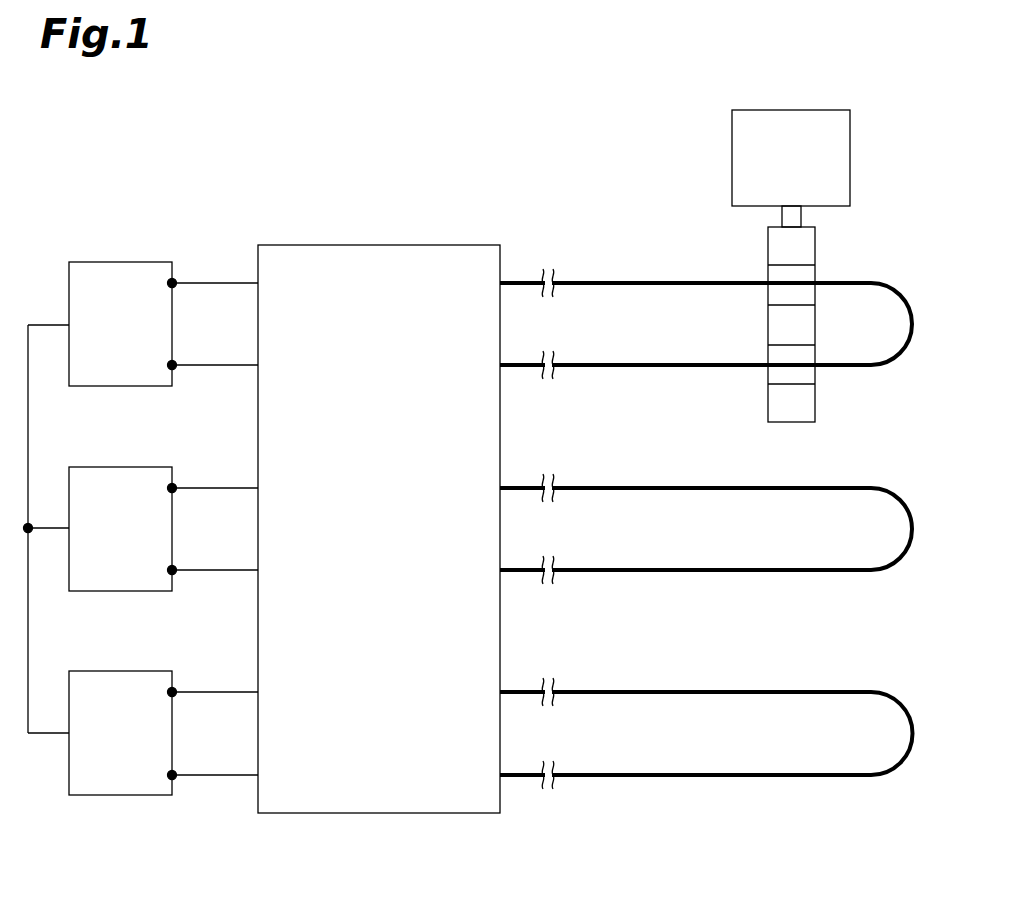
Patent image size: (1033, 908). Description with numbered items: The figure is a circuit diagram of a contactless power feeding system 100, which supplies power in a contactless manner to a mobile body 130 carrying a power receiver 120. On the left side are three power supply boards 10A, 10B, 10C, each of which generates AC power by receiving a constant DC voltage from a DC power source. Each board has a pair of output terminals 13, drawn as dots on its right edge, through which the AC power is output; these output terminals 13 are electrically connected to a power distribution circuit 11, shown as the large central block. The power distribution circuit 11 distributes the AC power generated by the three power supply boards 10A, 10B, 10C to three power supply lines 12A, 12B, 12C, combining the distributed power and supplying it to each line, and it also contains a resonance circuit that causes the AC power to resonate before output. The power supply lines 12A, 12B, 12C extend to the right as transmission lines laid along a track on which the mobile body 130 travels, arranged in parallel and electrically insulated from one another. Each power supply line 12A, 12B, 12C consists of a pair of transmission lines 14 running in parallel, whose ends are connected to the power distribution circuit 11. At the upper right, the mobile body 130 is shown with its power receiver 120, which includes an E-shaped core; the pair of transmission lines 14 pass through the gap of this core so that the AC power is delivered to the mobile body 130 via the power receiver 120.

The contactless power feeding system 100 is at (522, 200).
The power distribution circuit 11 is at (396, 245).
The power supply board 10A is at (120, 251).
The power supply board 10B is at (120, 456).
The power supply board 10C is at (120, 660).
The output terminals 13 is at (176, 362).
The power supply line 12A is at (640, 271).
The power supply line 12B is at (640, 476).
The power supply line 12C is at (640, 680).
The transmission lines 14 is at (652, 286).
The mobile body 130 is at (810, 110).
The power receiver 120 is at (786, 424).